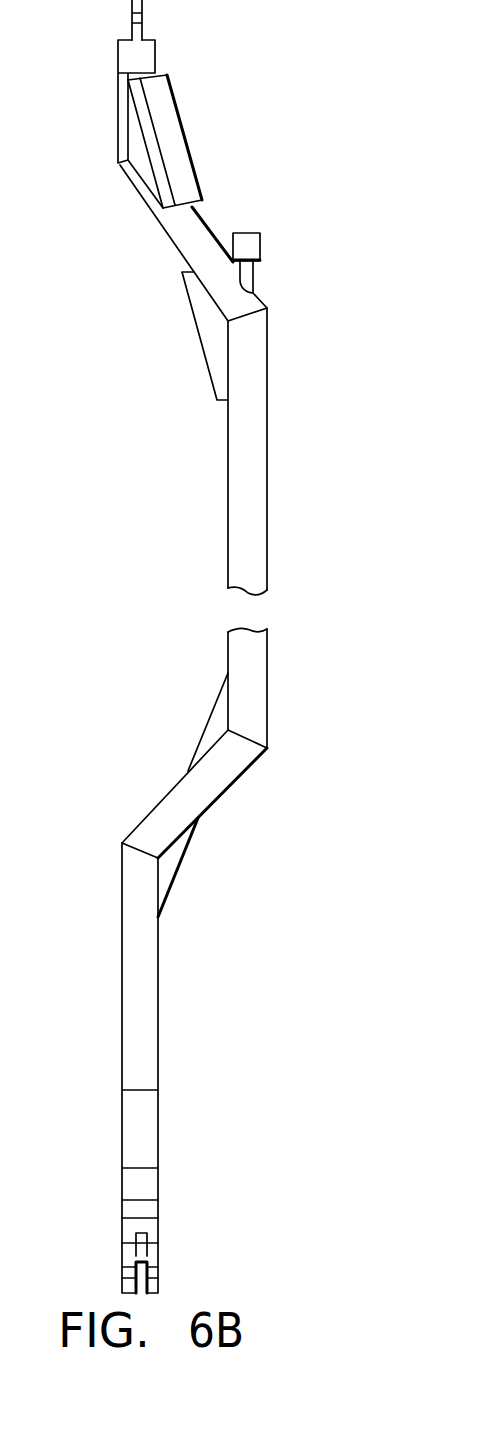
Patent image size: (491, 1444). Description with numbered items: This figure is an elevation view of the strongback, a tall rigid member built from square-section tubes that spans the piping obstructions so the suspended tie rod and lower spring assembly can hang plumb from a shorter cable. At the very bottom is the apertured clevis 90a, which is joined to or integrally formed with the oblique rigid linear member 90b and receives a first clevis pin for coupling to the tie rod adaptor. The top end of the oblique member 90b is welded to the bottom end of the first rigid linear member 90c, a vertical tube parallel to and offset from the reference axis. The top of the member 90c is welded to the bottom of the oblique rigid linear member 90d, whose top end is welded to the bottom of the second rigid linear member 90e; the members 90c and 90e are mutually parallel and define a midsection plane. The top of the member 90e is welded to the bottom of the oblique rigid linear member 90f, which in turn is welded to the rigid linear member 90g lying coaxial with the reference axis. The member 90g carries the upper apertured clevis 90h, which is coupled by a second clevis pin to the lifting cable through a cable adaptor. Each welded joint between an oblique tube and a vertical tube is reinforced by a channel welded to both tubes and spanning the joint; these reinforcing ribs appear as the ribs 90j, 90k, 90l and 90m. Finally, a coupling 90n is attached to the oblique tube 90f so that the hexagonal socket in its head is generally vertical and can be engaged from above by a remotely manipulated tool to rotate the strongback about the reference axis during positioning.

The apertured clevis 90a is at (159, 1283).
The oblique rigid linear member 90b is at (159, 1207).
The first rigid linear member 90c is at (159, 1022).
The oblique rigid linear member 90d is at (227, 792).
The second rigid linear member 90e is at (267, 510).
The oblique rigid linear member 90f is at (175, 243).
The rigid linear member 90g is at (118, 108).
The apertured clevis 90h is at (143, 5).
The reinforcing rib 90j is at (183, 865).
The reinforcing rib 90k is at (207, 722).
The reinforcing rib 90l is at (204, 355).
The reinforcing rib 90m is at (185, 133).
The coupling 90n is at (250, 248).